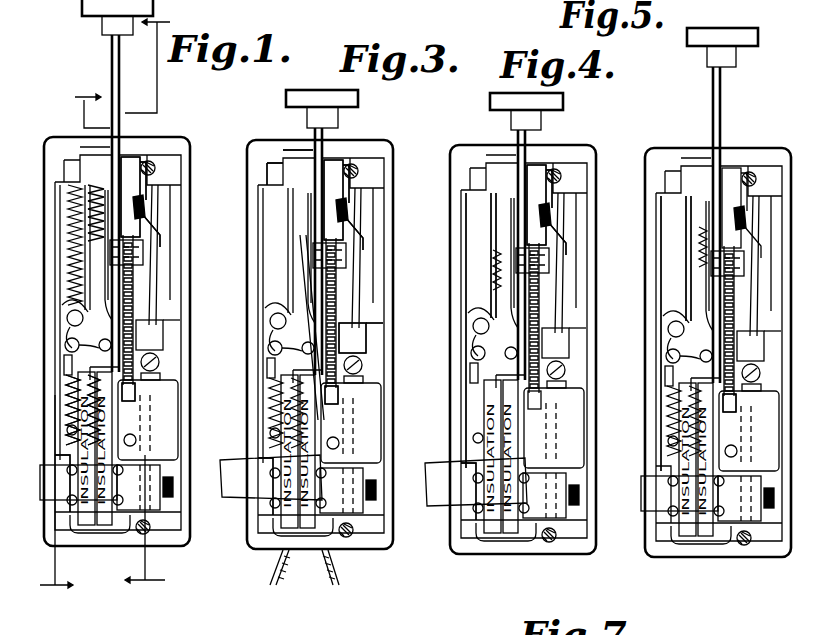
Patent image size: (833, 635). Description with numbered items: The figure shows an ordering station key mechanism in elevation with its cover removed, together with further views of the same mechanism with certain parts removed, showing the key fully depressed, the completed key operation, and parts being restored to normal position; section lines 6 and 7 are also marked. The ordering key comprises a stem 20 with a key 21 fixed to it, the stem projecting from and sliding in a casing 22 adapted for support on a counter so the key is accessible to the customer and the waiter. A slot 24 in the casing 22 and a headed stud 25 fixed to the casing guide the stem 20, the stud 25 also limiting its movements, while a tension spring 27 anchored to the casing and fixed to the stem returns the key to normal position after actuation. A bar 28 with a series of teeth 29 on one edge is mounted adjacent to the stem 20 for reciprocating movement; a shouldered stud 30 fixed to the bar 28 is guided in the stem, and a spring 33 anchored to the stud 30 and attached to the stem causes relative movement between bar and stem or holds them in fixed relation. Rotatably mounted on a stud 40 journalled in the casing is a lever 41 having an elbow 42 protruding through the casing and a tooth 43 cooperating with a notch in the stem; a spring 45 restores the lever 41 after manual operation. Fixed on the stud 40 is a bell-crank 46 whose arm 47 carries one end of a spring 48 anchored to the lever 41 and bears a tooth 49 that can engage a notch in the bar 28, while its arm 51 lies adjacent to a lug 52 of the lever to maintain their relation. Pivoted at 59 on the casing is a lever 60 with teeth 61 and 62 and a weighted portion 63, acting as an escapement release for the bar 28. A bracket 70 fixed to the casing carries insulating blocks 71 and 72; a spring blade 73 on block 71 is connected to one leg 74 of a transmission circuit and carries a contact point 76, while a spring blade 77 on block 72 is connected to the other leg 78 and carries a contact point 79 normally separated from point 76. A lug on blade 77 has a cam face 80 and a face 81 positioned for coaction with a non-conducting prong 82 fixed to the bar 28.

In FIG. 1, the section line 6- 6 is at (66, 342).
In FIG. 1, the section line 7- 7 is at (153, 308).
In FIG. 1, the stem 20 is at (112, 72).
In FIG. 3, the stem 20 is at (326, 142).
In FIG. 4, the stem 20 is at (533, 142).
In FIG. 5, the stem 20 is at (722, 135).
In FIG. 1, the key 21 is at (108, 22).
In FIG. 3, the key 21 is at (358, 100).
In FIG. 4, the key 21 is at (563, 100).
In FIG. 5, the key 21 is at (707, 60).
In FIG. 1, the casing 22 is at (62, 147).
In FIG. 1, the slot 24 is at (130, 157).
In FIG. 1, the headed stud 25 is at (134, 470).
In FIG. 3, the headed stud 25 is at (375, 400).
In FIG. 1, the spring 27 is at (68, 428).
In FIG. 1, the bar 28 is at (135, 168).
In FIG. 3, the bar 28 is at (345, 205).
In FIG. 4, the bar 28 is at (552, 290).
In FIG. 5, the bar 28 is at (765, 205).
In FIG. 1, the teeth 29 is at (135, 292).
In FIG. 3, the teeth 29 is at (337, 416).
In FIG. 1, the shouldered stud 30 is at (80, 160).
In FIG. 3, the shouldered stud 30 is at (315, 165).
In FIG. 4, the shouldered stud 30 is at (496, 270).
In FIG. 5, the shouldered stud 30 is at (722, 193).
In FIG. 1, the spring 33 is at (75, 452).
In FIG. 5, the spring 33 is at (698, 234).
In FIG. 1, the stud 40 is at (72, 318).
In FIG. 5, the stud 40 is at (698, 385).
In FIG. 1, the lever 41 is at (70, 396).
In FIG. 3, the lever 41 is at (240, 497).
In FIG. 1, the elbow 42 is at (48, 503).
In FIG. 3, the elbow 42 is at (222, 470).
In FIG. 4, the elbow 42 is at (428, 470).
In FIG. 1, the tooth 43 is at (130, 240).
In FIG. 5, the tooth 43 is at (700, 262).
In FIG. 1, the spring 45 is at (85, 265).
In FIG. 4, the spring 45 is at (498, 292).
In FIG. 5, the spring 45 is at (690, 282).
In FIG. 3, the bell-crank 46 is at (382, 423).
In FIG. 4, the bell-crank 46 is at (450, 400).
In FIG. 5, the bell-crank 46 is at (685, 330).
In FIG. 1, the arm 47 is at (108, 316).
In FIG. 4, the arm 47 is at (510, 320).
In FIG. 5, the arm 47 is at (710, 305).
In FIG. 1, the spring 48 is at (78, 348).
In FIG. 3, the spring 48 is at (296, 310).
In FIG. 5, the tooth 49 is at (760, 268).
In FIG. 1, the arm 51 is at (65, 335).
In FIG. 4, the arm 51 is at (472, 347).
In FIG. 5, the arm 51 is at (672, 352).
In FIG. 1, the lug 52 is at (66, 368).
In FIG. 4, the lug 52 is at (512, 367).
In FIG. 5, the lug 52 is at (690, 380).
In FIG. 1, the pivoted center 59 is at (178, 386).
In FIG. 3, the pivoted center 59 is at (300, 392).
In FIG. 1, the lever 60 is at (160, 332).
In FIG. 3, the lever 60 is at (366, 335).
In FIG. 3, the tooth 61 is at (345, 320).
In FIG. 3, the tooth 62 is at (362, 412).
In FIG. 3, the weighted portion 63 is at (380, 222).
In FIG. 1, the bracket 70 is at (160, 510).
In FIG. 3, the bracket 70 is at (360, 512).
In FIG. 4, the bracket 70 is at (540, 515).
In FIG. 1, the block 71 is at (88, 530).
In FIG. 3, the block 71 is at (290, 530).
In FIG. 4, the block 71 is at (492, 535).
In FIG. 1, the block 72 is at (105, 530).
In FIG. 3, the block 72 is at (308, 530).
In FIG. 4, the block 72 is at (510, 535).
In FIG. 3, the spring blade 73 is at (268, 395).
In FIG. 5, the spring blade 73 is at (705, 213).
In FIG. 1, the leg 74 is at (78, 483).
In FIG. 3, the leg 74 is at (265, 582).
In FIG. 3, the contact point 76 is at (290, 200).
In FIG. 4, the contact point 76 is at (500, 208).
In FIG. 5, the contact point 76 is at (703, 198).
In FIG. 3, the spring blade 77 is at (300, 235).
In FIG. 4, the spring blade 77 is at (520, 238).
In FIG. 1, the leg 78 is at (130, 447).
In FIG. 3, the leg 78 is at (337, 583).
In FIG. 3, the contact point 79 is at (300, 165).
In FIG. 4, the contact point 79 is at (512, 165).
In FIG. 3, the face 80 is at (355, 225).
In FIG. 4, the face 80 is at (565, 235).
In FIG. 3, the face 81 is at (343, 274).
In FIG. 4, the face 81 is at (560, 260).
In FIG. 1, the prong 82 is at (145, 205).
In FIG. 3, the prong 82 is at (348, 240).
In FIG. 4, the prong 82 is at (557, 295).
In FIG. 5, the prong 82 is at (748, 240).